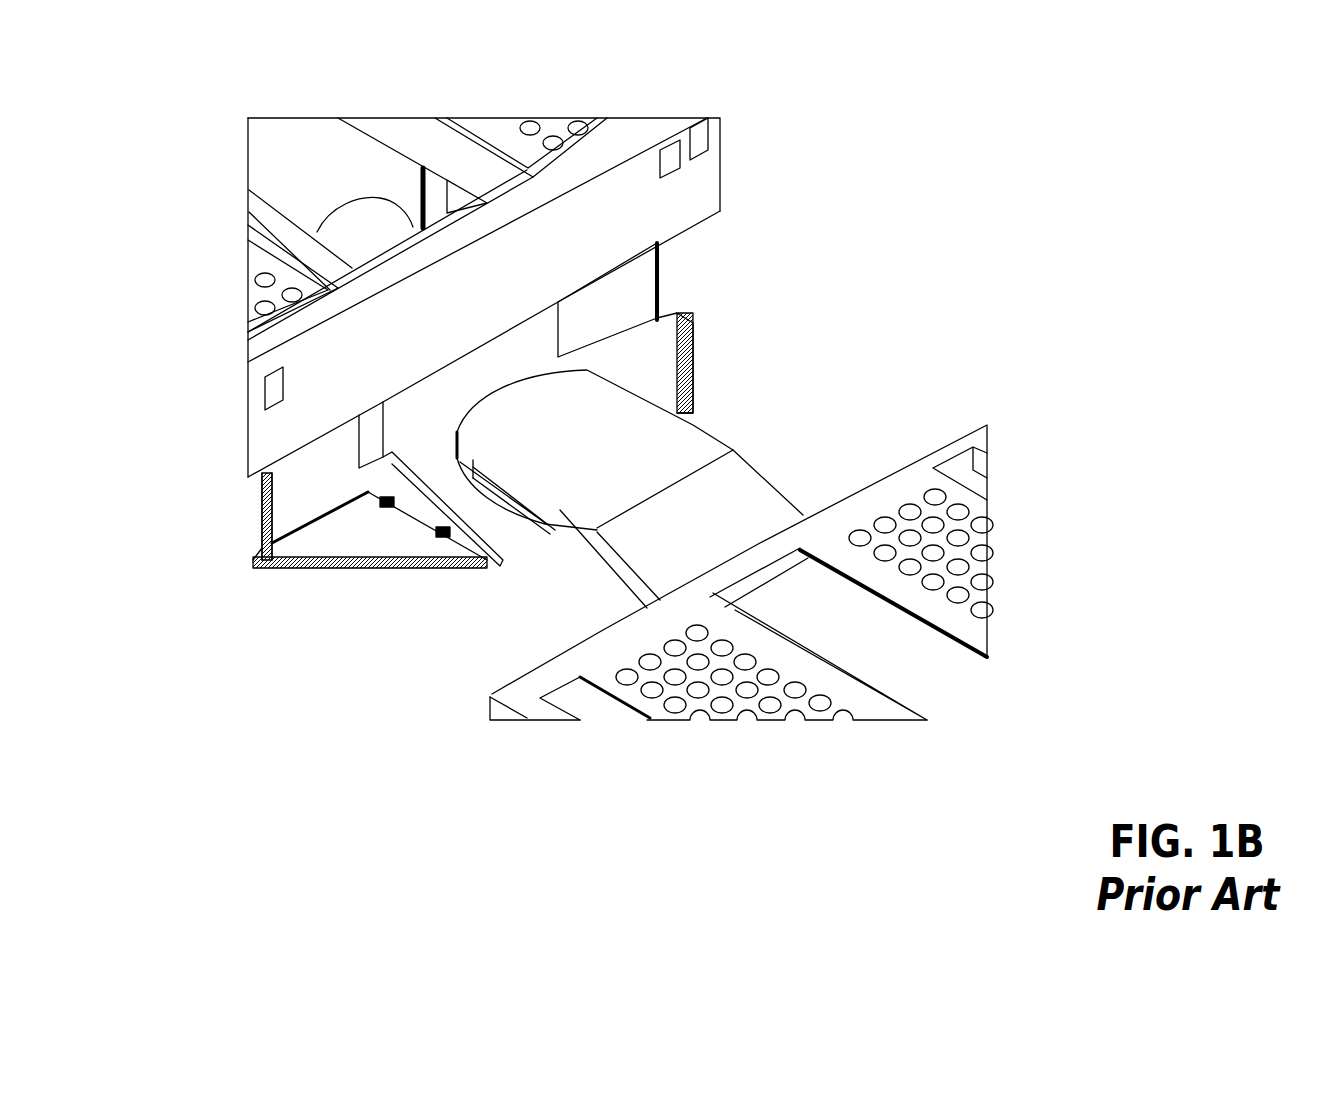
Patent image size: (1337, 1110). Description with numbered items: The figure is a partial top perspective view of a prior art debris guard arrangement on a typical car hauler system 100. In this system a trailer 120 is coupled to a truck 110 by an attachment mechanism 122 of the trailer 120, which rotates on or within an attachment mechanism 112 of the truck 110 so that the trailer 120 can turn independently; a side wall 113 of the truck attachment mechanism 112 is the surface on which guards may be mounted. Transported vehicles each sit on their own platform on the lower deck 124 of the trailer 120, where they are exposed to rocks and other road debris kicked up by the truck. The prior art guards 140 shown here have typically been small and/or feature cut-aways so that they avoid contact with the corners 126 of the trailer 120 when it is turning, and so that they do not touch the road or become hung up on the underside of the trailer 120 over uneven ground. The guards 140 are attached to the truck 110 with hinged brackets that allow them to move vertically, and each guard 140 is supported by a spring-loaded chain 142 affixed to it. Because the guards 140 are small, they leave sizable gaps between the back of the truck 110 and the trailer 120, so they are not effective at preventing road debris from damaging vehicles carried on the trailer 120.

The car hauler system 100 is at (1132, 90).
The truck 110 is at (693, 178).
The attachment mechanism of the truck 112 is at (513, 522).
The side wall 113 is at (475, 533).
The trailer 120 is at (857, 477).
The attachment mechanism of the trailer 122 is at (690, 440).
The lower deck 124 is at (710, 690).
The corners of the trailer 126 is at (507, 692).
The guard 140 is at (658, 360).
The spring-loaded chain 142 is at (258, 515).